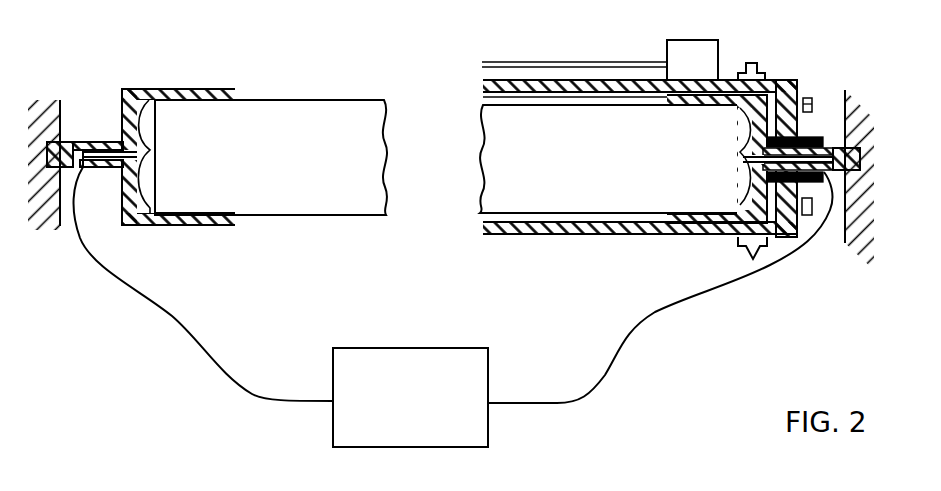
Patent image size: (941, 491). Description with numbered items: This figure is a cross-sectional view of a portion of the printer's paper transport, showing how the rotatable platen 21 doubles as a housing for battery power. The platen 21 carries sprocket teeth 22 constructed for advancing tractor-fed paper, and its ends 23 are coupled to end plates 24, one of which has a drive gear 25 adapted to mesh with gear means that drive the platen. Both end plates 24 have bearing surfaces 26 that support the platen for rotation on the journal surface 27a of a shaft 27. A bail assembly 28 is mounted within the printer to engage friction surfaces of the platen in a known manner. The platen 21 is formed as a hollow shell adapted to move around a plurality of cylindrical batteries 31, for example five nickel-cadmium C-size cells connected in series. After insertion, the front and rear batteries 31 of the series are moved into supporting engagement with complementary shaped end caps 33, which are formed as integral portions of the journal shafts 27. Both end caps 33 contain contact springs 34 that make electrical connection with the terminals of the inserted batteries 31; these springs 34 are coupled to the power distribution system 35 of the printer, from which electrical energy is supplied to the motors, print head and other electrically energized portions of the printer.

The rotatable platen 21 is at (537, 80).
The sprocket teeth 22 is at (752, 65).
The platen ends 23 is at (778, 80).
The end plates 24 is at (798, 95).
The drive gear 25 is at (814, 100).
The bearing surfaces 26 is at (804, 216).
The shaft 27 is at (81, 141).
The journal surface 27a is at (829, 176).
The bail assembly 28 is at (658, 50).
The cylindrical batteries 31 is at (297, 163).
The end caps 33 is at (172, 89).
The contact springs 34 is at (156, 168).
The power distribution system 35 is at (477, 348).